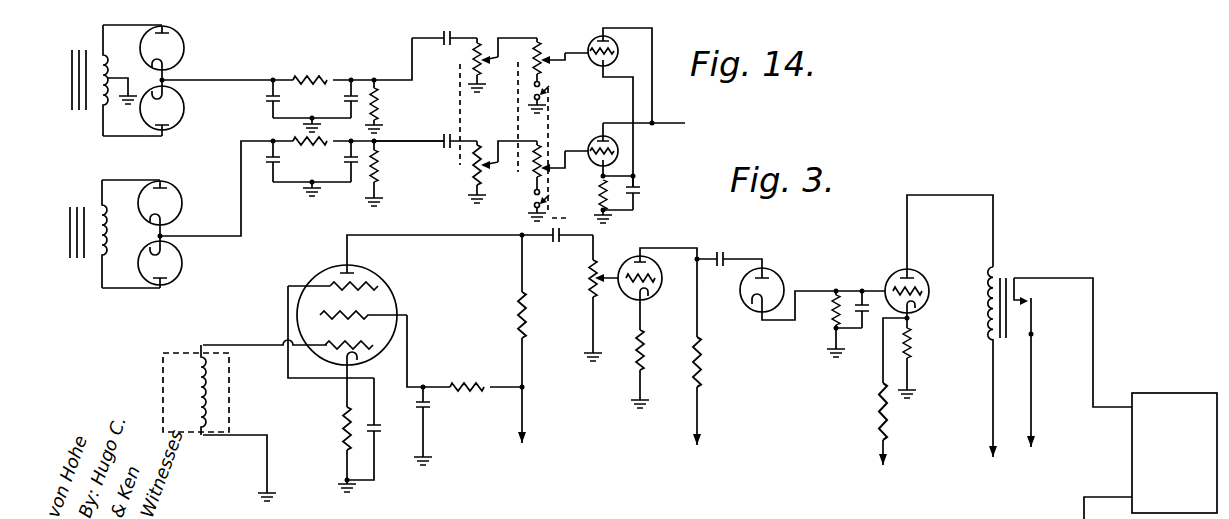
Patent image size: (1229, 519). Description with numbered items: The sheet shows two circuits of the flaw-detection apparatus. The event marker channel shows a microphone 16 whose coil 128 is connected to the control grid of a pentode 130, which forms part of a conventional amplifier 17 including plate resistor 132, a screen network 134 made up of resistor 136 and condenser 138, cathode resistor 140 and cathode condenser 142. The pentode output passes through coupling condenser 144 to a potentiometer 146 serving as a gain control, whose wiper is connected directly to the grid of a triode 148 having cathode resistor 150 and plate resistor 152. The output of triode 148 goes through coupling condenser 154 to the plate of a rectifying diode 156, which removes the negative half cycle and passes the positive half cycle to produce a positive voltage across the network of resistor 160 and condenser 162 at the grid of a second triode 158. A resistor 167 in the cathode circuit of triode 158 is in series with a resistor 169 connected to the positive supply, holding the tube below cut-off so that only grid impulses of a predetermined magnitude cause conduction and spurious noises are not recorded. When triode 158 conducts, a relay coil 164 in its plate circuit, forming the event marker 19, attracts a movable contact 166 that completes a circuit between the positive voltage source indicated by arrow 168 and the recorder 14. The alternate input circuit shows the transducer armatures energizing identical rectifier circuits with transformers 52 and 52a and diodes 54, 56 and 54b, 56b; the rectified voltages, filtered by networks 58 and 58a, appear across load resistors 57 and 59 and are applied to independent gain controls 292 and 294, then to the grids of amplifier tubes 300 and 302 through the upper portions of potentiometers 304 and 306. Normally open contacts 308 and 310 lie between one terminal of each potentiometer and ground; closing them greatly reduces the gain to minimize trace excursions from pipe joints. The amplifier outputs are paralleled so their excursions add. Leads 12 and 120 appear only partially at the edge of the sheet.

In FIG. 14, the transformer 52 is at (100, 72).
In FIG. 14, the diode 54 is at (178, 48).
In FIG. 14, the diode 56 is at (178, 114).
In FIG. 14, the load resistor 57 is at (377, 99).
In FIG. 14, the filter network 58 is at (323, 106).
In FIG. 14, the filter network 58a is at (328, 168).
In FIG. 14, the load resistor 59 is at (377, 171).
In FIG. 14, the transformer 52a is at (96, 222).
In FIG. 14, the diode 54b is at (175, 201).
In FIG. 14, the diode 56b is at (175, 275).
In FIG. 14, the gain control 292 is at (468, 55).
In FIG. 14, the gain control 294 is at (472, 168).
In FIG. 14, the potentiometer 304 is at (534, 50).
In FIG. 14, the potentiometer 306 is at (542, 157).
In FIG. 14, the normally open contact 308 is at (546, 88).
In FIG. 14, the normally open contact 310 is at (532, 205).
In FIG. 14, the amplifier tube 300 is at (618, 52).
In FIG. 14, the amplifier tube 302 is at (594, 168).
In FIG. 3, the microphone 16 is at (190, 434).
In FIG. 3, the coil 128 is at (200, 373).
In FIG. 3, the pentode 130 is at (381, 299).
In FIG. 3, the plate resistor 132 is at (518, 315).
In FIG. 3, the screen network 134 is at (486, 418).
In FIG. 3, the resistor 136 is at (479, 380).
In FIG. 3, the condenser 138 is at (428, 410).
In FIG. 3, the cathode resistor 140 is at (344, 438).
In FIG. 3, the cathode condenser 142 is at (377, 437).
In FIG. 3, the coupling condenser 144 is at (560, 242).
In FIG. 3, the potentiometer 146 is at (588, 280).
In FIG. 3, the triode 148 is at (657, 289).
In FIG. 3, the cathode resistor 150 is at (636, 356).
In FIG. 3, the plate resistor 152 is at (702, 353).
In FIG. 3, the amplifier 17 is at (681, 233).
In FIG. 3, the coupling condenser 154 is at (718, 250).
In FIG. 3, the rectifying diode 156 is at (776, 283).
In FIG. 3, the triode 158 is at (891, 280).
In FIG. 3, the resistor 160 is at (832, 313).
In FIG. 3, the condenser 162 is at (867, 315).
In FIG. 3, the resistor 167 is at (913, 346).
In FIG. 3, the resistor 169 is at (878, 413).
In FIG. 3, the event marker 19 is at (1022, 176).
In FIG. 3, the relay coil 164 is at (973, 310).
In FIG. 3, the movable contact 166 is at (1034, 311).
In FIG. 3, the arrow 168 is at (1033, 436).
In FIG. 3, the recorder 14 is at (1178, 423).
In FIG. 3, the lead 12 is at (674, 516).
In FIG. 3, the lead 120 is at (784, 516).